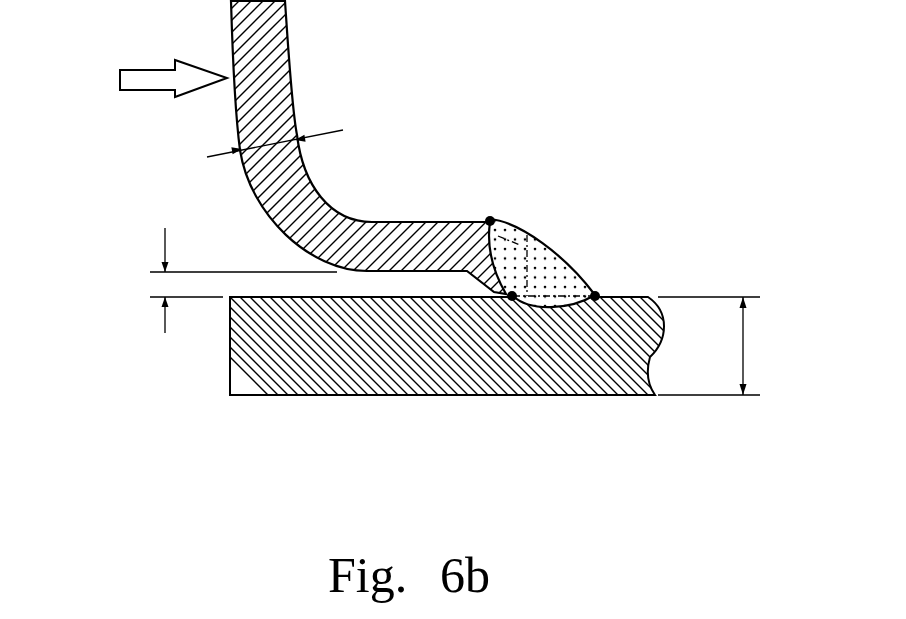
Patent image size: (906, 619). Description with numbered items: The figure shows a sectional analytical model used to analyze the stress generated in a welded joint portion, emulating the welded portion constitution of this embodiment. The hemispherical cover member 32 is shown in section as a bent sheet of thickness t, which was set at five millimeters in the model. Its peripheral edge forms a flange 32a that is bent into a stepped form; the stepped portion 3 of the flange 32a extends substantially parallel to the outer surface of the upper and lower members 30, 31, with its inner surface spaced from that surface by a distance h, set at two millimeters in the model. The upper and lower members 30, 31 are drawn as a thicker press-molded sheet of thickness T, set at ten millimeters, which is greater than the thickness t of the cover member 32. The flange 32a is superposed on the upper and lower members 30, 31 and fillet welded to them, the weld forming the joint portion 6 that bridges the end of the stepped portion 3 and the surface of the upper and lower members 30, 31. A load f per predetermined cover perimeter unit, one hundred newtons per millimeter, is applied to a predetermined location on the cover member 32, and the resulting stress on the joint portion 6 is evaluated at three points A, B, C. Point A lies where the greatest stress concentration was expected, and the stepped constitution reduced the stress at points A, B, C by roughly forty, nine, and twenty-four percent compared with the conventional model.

The stepped portion 3 is at (407, 155).
The cover member 32 is at (407, 155).
The flange 32a is at (418, 214).
The joint portion 6 is at (584, 205).
The upper member 30 is at (463, 392).
The lower member 31 is at (303, 396).
The point A is at (510, 297).
The point B is at (491, 219).
The point C is at (597, 293).
The sheet thickness of the upper and lower members T is at (709, 346).
The distance h is at (234, 280).
The sheet thickness of the cover member t is at (277, 125).
The load f is at (155, 78).